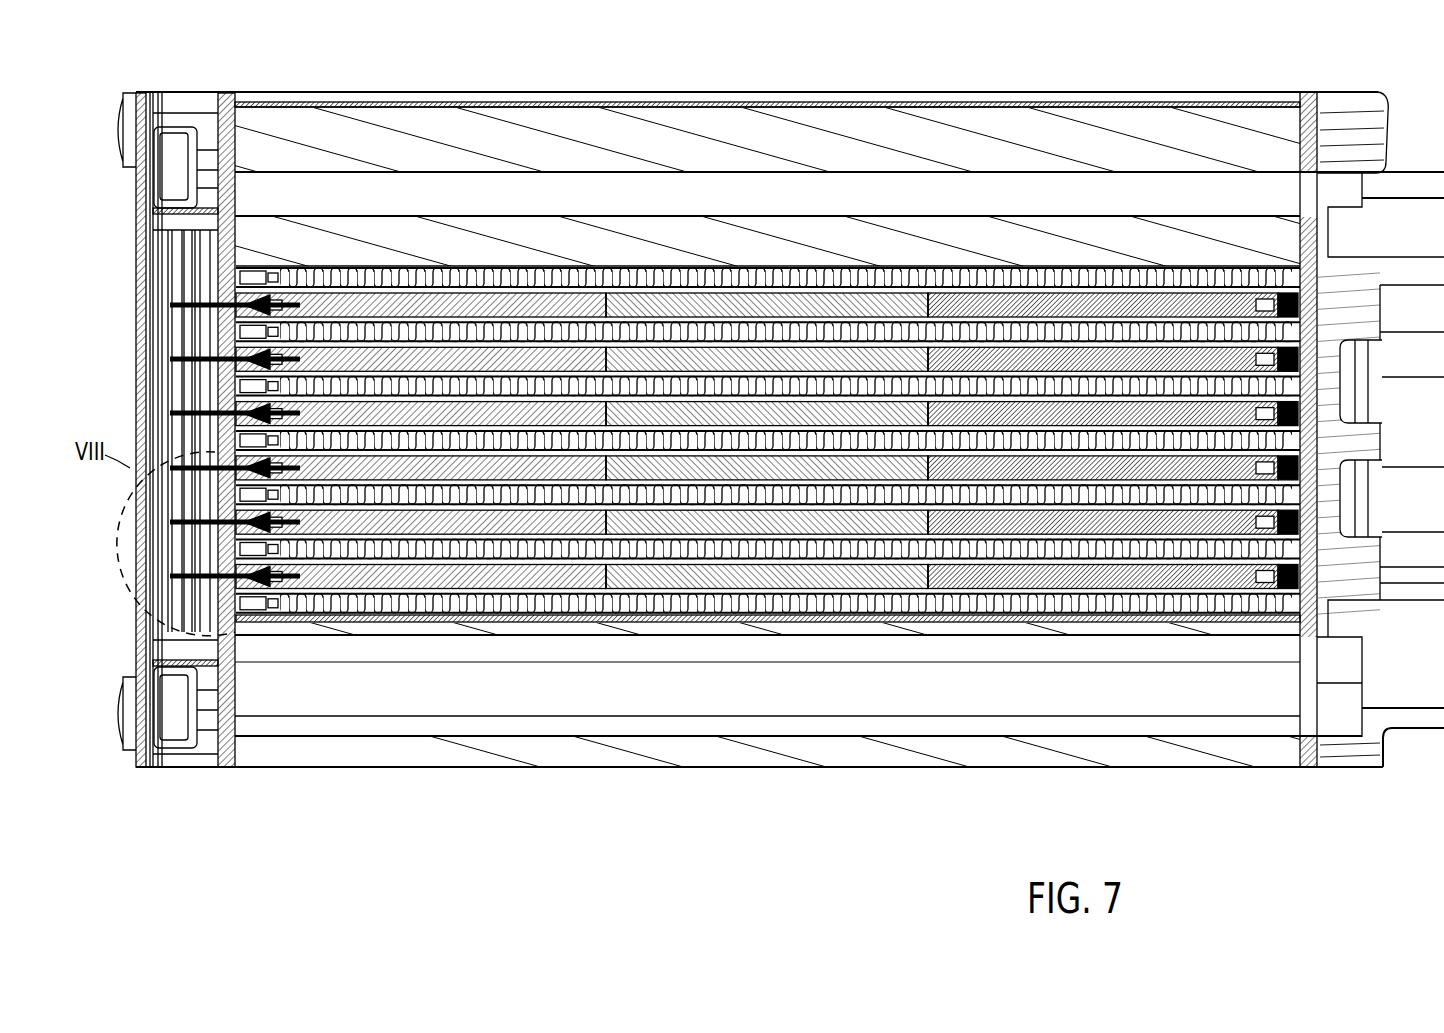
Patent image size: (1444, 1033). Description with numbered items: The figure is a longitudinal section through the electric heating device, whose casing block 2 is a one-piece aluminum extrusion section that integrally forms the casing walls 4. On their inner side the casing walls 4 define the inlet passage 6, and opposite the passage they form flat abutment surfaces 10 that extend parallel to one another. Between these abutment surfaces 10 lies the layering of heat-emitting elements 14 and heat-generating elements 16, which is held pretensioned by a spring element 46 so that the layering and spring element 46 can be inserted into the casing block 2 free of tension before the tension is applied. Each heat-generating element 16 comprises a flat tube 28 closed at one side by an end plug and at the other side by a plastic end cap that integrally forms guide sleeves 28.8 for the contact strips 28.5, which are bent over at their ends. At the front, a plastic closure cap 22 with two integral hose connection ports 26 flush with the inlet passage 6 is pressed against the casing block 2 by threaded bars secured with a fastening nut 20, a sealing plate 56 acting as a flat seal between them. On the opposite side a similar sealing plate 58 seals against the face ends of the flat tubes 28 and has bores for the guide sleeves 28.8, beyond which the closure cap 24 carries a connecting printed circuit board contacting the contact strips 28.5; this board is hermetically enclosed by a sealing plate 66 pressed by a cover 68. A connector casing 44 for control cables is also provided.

The casing block 2 is at (402, 137).
The casing walls 4 is at (598, 692).
The inlet passage 6 is at (688, 170).
The abutment surface 10 is at (1120, 268).
The heat-emitting elements 14 is at (858, 268).
The heat-generating elements 16 is at (1030, 265).
The fastening nut 20 is at (134, 96).
The closure cap 22 is at (1352, 125).
The closure cap 24 is at (222, 130).
The connection ports 26 is at (1413, 180).
The flat tube 28 is at (357, 616).
The contact strip 28.5 is at (133, 597).
The guide sleeves 28.8 is at (190, 663).
The connector casing 44 is at (1410, 368).
The spring element 46 is at (742, 623).
The sealing plate 56 is at (1303, 768).
The sealing plate 58 is at (230, 768).
The sealing plate 66 is at (137, 300).
The cover 68 is at (137, 215).